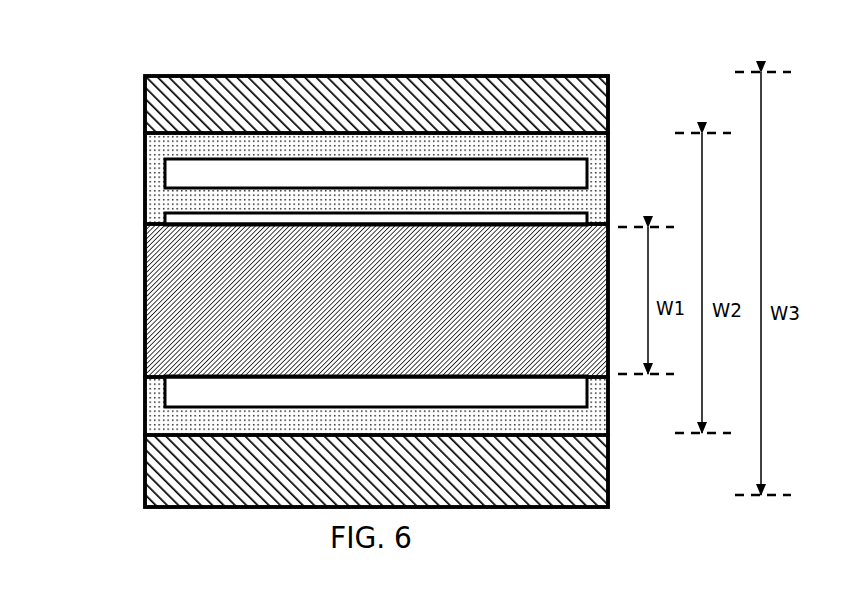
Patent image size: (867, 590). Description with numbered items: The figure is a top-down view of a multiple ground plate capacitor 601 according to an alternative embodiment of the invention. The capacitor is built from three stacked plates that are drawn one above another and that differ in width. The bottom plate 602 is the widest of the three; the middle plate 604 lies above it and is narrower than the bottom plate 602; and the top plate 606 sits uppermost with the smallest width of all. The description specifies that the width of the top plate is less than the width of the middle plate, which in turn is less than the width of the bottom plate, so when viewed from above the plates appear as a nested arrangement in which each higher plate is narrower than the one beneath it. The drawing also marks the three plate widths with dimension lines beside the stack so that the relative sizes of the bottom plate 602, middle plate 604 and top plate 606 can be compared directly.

The multiple ground plate capacitor 601 is at (327, 261).
The bottom plate 602 is at (145, 103).
The middle plate 604 is at (145, 177).
The top plate 606 is at (150, 293).